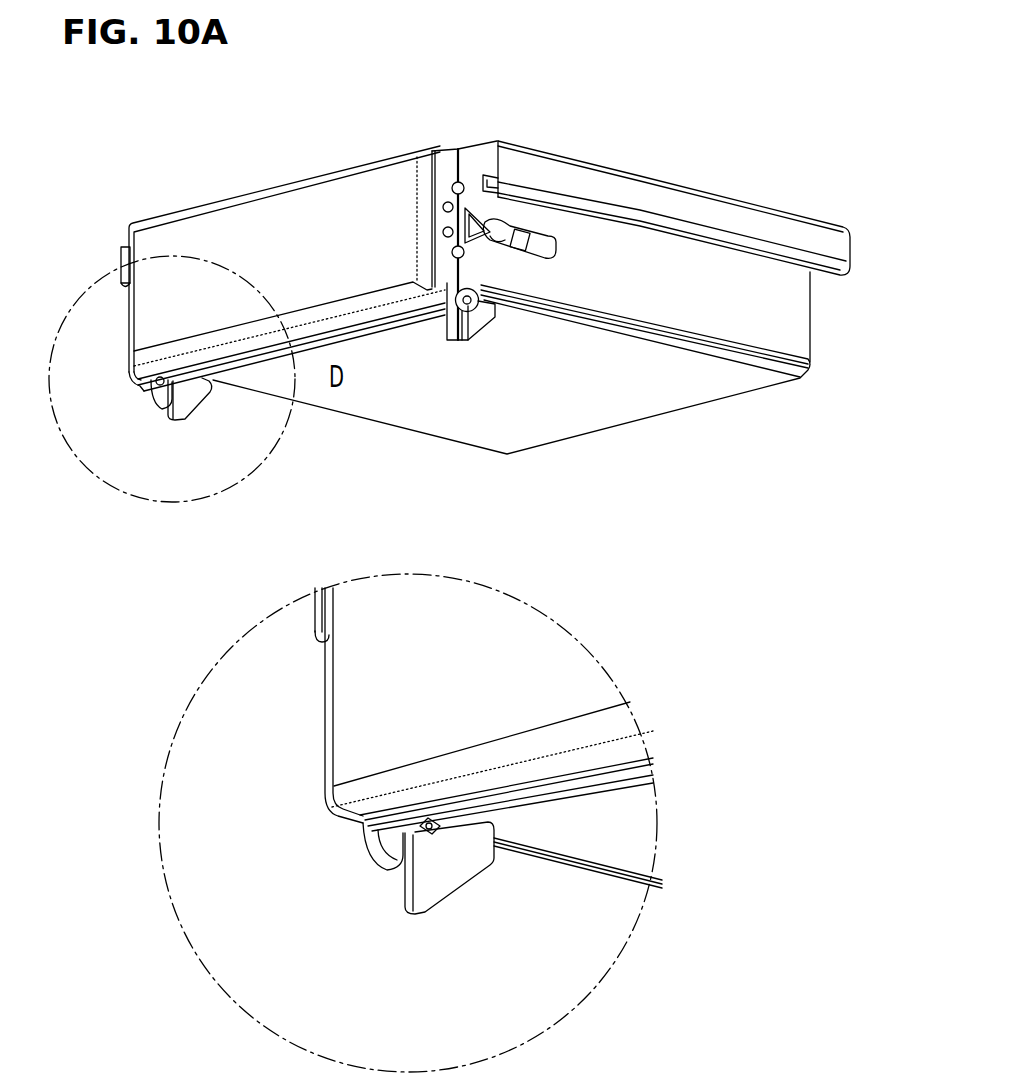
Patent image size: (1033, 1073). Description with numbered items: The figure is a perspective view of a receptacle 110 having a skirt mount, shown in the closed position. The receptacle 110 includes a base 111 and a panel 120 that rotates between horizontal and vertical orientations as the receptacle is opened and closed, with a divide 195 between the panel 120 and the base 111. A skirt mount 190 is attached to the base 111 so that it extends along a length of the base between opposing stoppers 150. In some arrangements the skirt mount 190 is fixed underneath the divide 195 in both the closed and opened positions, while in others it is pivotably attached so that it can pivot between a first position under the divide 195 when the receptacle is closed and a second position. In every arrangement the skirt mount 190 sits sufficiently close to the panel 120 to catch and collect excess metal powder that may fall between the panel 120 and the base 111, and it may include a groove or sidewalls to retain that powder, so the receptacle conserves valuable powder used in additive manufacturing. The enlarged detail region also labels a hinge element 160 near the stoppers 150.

The receptacle 110 is at (610, 253).
The base 111 is at (653, 370).
The panel 120 is at (258, 243).
The stoppers 150 is at (183, 392).
The hinge pin 160 is at (385, 847).
The skirt mount 190 is at (216, 385).
The divide 195 is at (430, 153).